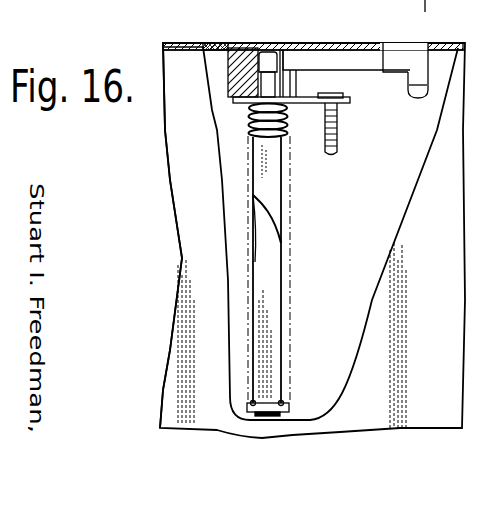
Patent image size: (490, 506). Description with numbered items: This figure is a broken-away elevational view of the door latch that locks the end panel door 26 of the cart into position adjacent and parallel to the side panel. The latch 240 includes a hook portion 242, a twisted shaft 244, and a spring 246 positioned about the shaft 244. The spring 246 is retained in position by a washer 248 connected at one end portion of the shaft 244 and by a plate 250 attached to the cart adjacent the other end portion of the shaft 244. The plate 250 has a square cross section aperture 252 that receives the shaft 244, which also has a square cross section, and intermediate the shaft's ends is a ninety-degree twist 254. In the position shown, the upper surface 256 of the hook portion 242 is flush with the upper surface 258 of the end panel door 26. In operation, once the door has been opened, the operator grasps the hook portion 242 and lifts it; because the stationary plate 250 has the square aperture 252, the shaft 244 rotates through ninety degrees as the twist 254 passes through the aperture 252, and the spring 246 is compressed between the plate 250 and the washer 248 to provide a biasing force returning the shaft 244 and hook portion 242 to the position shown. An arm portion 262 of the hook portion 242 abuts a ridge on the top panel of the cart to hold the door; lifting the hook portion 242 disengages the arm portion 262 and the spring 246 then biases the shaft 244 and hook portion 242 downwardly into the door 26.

The end panel door 26 is at (213, 221).
The latch 240 is at (303, 42).
The hook portion 242 is at (347, 68).
The twisted shaft 244 is at (286, 306).
The spring 246 is at (283, 139).
The washer 248 is at (288, 411).
The plate 250 is at (308, 108).
The square cross section aperture 252 is at (246, 112).
The twist 254 is at (280, 213).
The upper surface of the hook portion 256 is at (410, 43).
The upper surface of the end panel door 258 is at (212, 43).
The arm portion 262 is at (418, 100).